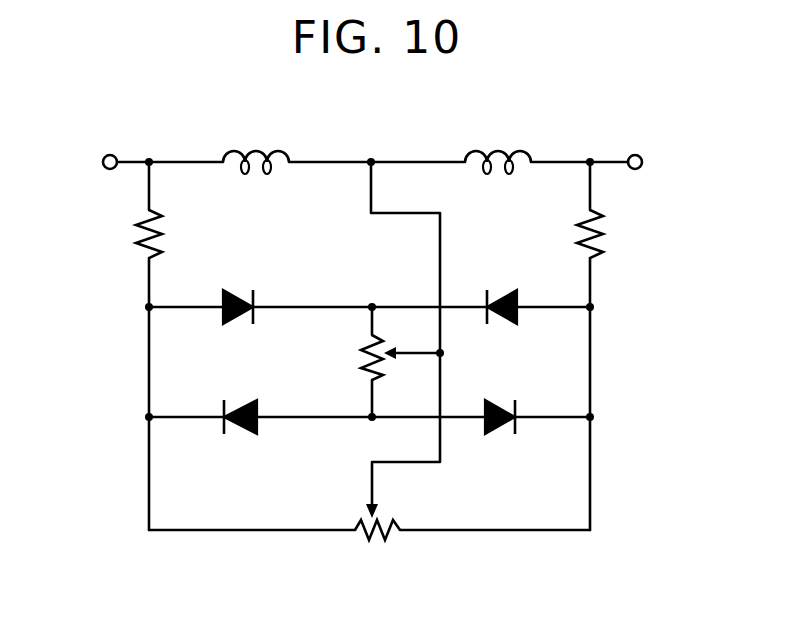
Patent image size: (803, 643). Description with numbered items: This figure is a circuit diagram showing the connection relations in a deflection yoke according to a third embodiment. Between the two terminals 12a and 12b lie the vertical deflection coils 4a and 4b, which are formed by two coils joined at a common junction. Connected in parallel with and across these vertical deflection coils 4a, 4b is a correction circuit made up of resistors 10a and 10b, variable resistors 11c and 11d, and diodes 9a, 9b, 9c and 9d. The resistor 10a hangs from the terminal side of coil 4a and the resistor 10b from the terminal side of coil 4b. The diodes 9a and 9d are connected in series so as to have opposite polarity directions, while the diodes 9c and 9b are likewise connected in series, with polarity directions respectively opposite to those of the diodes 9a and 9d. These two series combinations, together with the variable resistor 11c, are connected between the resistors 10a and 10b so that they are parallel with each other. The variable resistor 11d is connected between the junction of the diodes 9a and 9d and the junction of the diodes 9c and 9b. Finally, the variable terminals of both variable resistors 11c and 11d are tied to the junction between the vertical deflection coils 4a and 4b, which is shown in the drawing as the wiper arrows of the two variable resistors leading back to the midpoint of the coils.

The terminal 12a is at (110, 154).
The terminal 12b is at (635, 154).
The vertical deflection coil 4a is at (256, 151).
The vertical deflection coil 4b is at (498, 151).
The resistor 10a is at (133, 240).
The resistor 10b is at (604, 242).
The diode 9a is at (238, 292).
The diode 9b is at (503, 436).
The diode 9c is at (240, 436).
The diode 9d is at (502, 292).
The variable resistor 11c is at (374, 546).
The variable resistor 11d is at (356, 352).